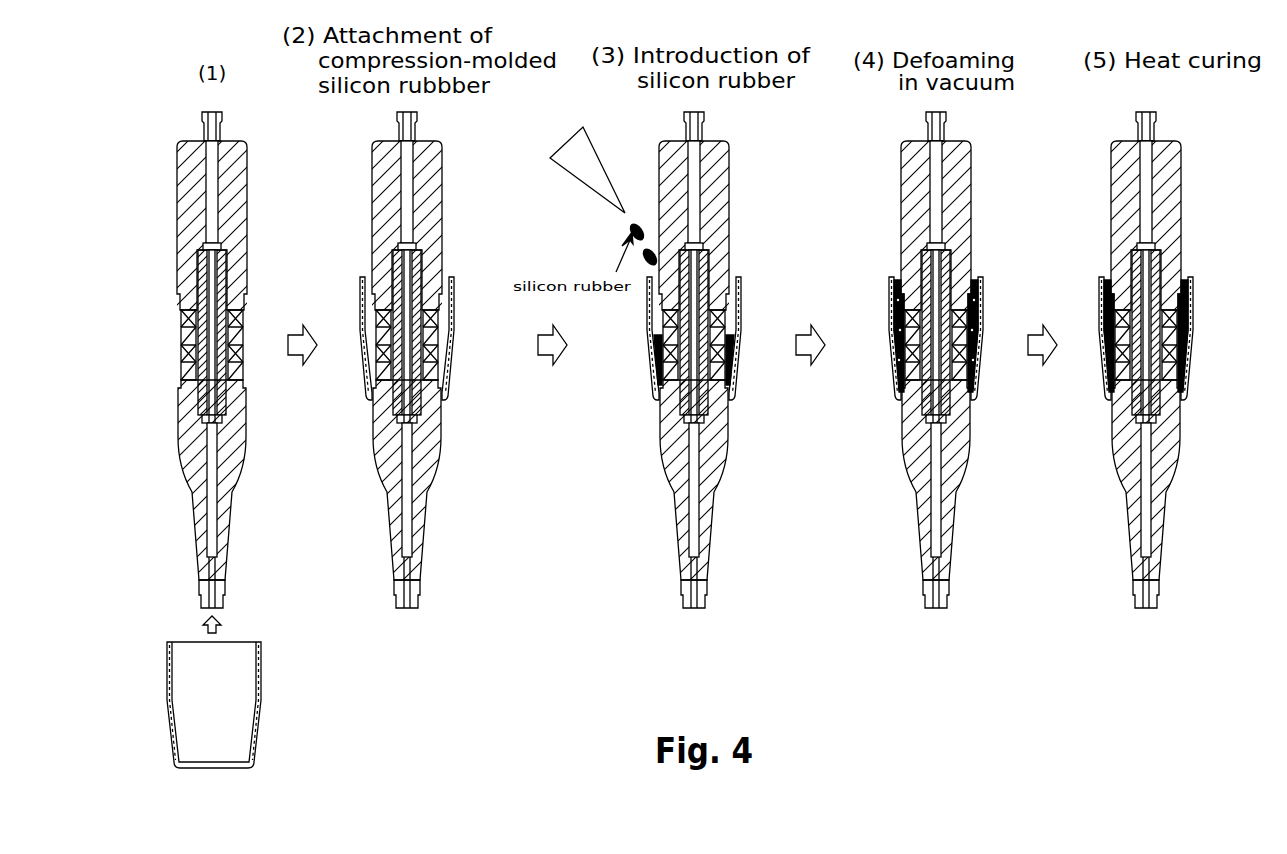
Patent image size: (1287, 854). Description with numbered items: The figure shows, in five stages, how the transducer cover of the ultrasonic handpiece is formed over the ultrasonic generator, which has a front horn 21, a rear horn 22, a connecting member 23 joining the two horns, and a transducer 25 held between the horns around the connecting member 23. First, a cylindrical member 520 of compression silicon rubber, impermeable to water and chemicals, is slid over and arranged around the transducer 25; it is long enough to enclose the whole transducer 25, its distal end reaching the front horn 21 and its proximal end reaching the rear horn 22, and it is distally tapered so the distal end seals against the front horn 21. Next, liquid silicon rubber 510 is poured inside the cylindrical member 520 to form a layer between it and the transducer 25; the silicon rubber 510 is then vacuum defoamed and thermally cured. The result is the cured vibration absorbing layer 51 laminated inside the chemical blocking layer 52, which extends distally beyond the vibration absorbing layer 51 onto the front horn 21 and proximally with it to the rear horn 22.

The front horn 21 is at (673, 380).
The rear horn 22 is at (668, 380).
The connecting member 23 is at (678, 335).
The transducer 25 is at (680, 382).
The vibration absorbing layer 51 is at (1092, 340).
The chemical blocking layer 52 is at (1110, 315).
The silicon rubber 510 is at (787, 318).
The cylindrical member 520 is at (610, 503).